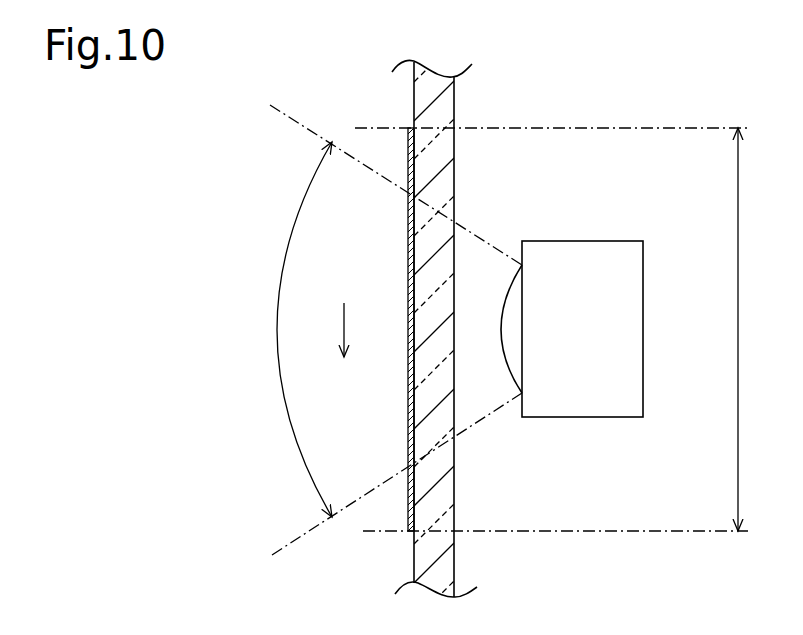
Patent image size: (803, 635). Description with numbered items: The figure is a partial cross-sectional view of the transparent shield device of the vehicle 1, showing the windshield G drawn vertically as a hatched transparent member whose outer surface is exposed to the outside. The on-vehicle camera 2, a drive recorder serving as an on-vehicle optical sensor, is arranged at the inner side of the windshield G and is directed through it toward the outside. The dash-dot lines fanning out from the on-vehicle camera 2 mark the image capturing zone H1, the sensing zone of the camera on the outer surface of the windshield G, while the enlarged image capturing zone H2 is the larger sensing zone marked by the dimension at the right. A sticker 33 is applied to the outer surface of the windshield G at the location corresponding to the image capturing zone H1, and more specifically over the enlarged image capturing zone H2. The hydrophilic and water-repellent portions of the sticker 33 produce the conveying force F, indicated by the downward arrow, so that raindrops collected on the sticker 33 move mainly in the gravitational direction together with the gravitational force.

The on-vehicle optical sensor-added vehicle 1 is at (427, 331).
The on-vehicle camera 2 is at (501, 364).
The sticker 33 is at (408, 149).
The windshield G is at (447, 554).
The image capturing zone H1 is at (277, 327).
The enlarged image capturing zone H2 is at (758, 329).
The conveying force F is at (341, 331).